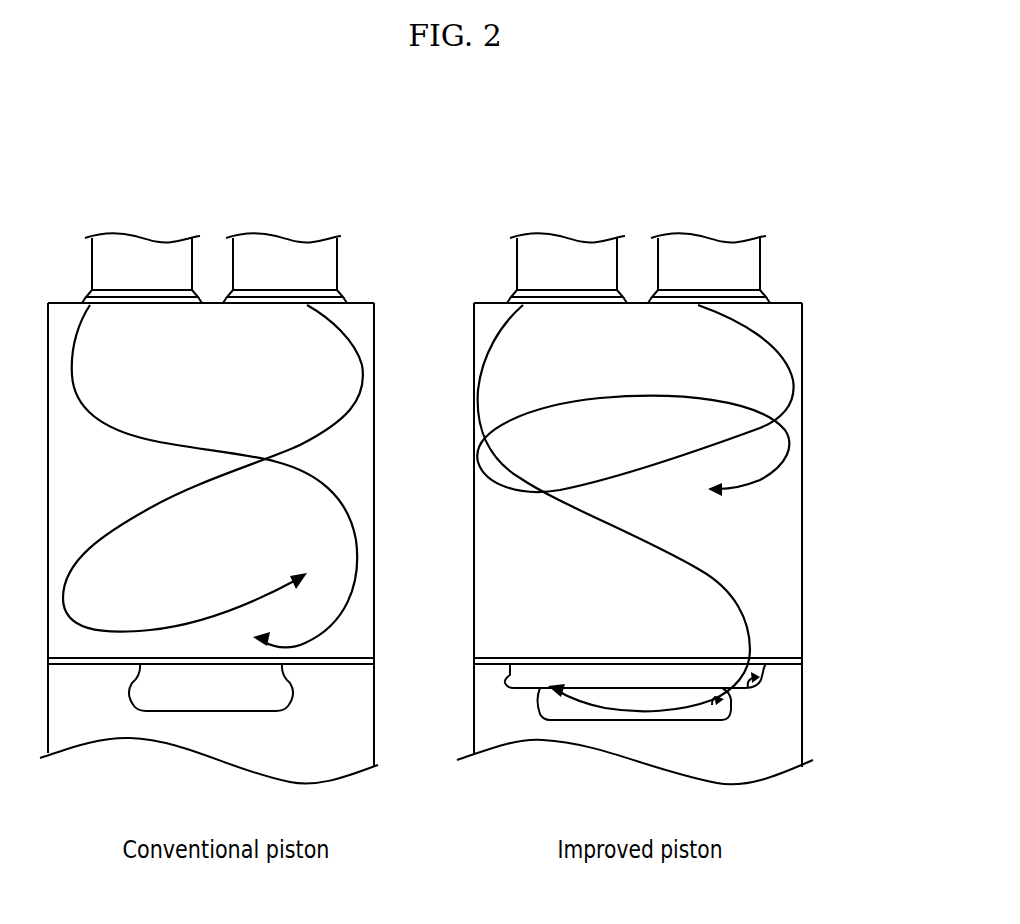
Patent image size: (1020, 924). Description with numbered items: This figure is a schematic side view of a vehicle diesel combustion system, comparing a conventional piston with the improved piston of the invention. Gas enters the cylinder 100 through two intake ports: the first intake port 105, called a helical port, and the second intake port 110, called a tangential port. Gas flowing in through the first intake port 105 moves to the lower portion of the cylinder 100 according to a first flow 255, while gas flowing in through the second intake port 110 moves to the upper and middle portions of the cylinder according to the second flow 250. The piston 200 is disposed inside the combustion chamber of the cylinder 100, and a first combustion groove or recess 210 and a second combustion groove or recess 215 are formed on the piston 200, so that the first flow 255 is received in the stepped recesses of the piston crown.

The cylinder 100 is at (806, 502).
The first intake port 105 is at (565, 245).
The second intake port 110 is at (708, 245).
The piston 200 is at (790, 692).
The first combustion groove 210 is at (750, 705).
The second combustion groove 215 is at (717, 730).
The second flow 250 is at (676, 397).
The first flow 255 is at (484, 352).